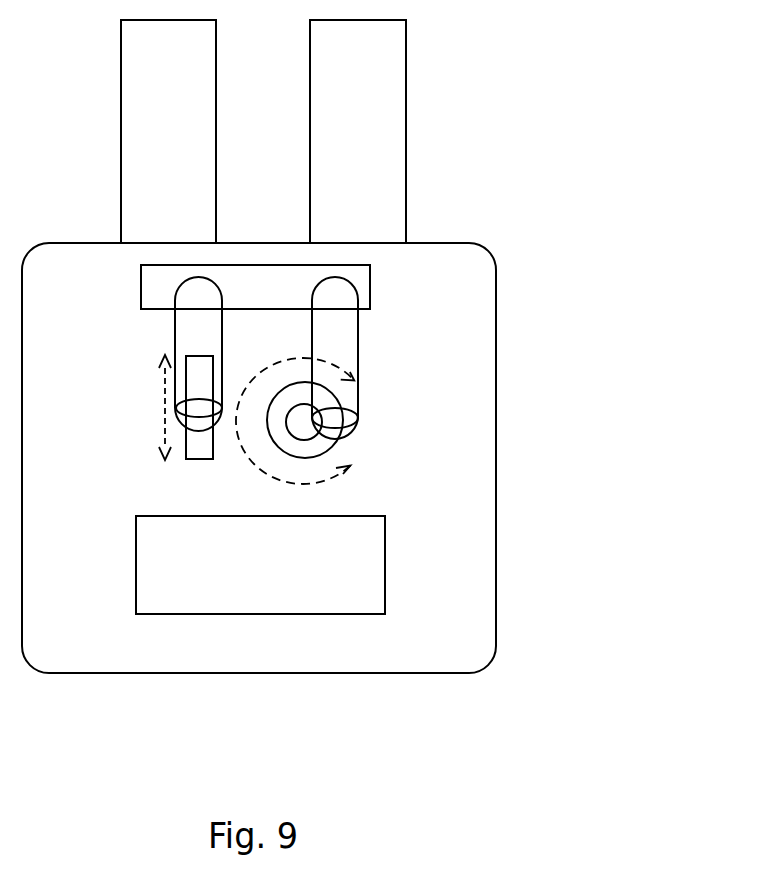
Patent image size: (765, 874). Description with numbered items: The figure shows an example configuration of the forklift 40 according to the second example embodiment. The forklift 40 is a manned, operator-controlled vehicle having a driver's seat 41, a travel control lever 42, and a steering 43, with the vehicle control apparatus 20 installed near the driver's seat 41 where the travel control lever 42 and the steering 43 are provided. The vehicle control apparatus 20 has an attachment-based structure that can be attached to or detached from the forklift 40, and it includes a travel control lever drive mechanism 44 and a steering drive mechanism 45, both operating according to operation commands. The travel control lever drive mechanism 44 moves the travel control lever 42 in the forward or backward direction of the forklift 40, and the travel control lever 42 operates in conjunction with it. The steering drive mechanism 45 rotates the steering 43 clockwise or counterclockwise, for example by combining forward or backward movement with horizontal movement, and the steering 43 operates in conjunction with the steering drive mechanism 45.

The vehicle control apparatus 20 is at (372, 285).
The forklift 40 is at (495, 283).
The driver's seat 41 is at (385, 565).
The travel control lever 42 is at (199, 408).
The steering 43 is at (338, 418).
The travel control lever drive mechanism 44 is at (175, 337).
The steering drive mechanism 45 is at (358, 345).